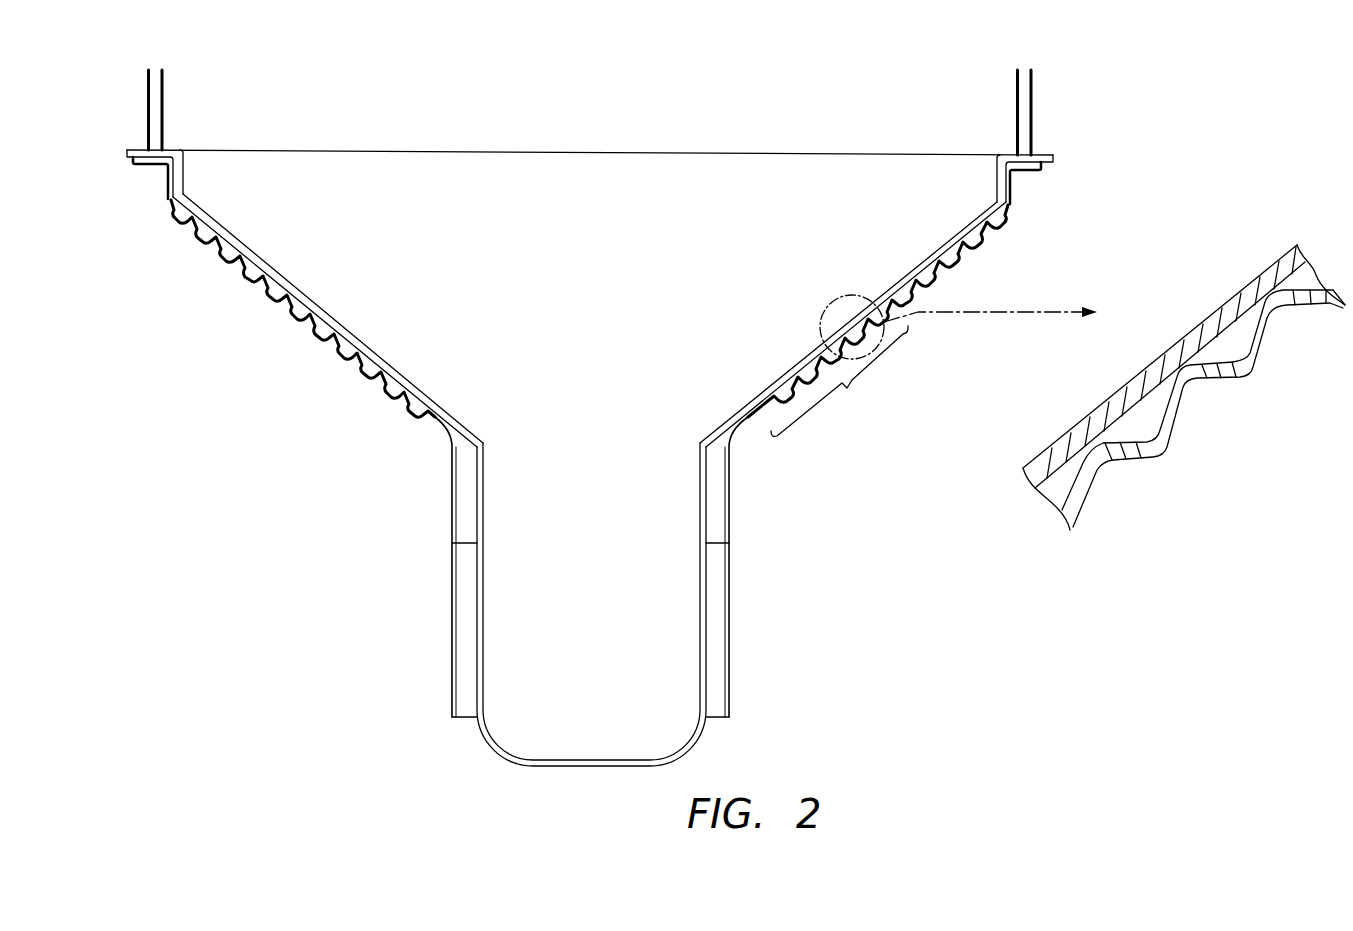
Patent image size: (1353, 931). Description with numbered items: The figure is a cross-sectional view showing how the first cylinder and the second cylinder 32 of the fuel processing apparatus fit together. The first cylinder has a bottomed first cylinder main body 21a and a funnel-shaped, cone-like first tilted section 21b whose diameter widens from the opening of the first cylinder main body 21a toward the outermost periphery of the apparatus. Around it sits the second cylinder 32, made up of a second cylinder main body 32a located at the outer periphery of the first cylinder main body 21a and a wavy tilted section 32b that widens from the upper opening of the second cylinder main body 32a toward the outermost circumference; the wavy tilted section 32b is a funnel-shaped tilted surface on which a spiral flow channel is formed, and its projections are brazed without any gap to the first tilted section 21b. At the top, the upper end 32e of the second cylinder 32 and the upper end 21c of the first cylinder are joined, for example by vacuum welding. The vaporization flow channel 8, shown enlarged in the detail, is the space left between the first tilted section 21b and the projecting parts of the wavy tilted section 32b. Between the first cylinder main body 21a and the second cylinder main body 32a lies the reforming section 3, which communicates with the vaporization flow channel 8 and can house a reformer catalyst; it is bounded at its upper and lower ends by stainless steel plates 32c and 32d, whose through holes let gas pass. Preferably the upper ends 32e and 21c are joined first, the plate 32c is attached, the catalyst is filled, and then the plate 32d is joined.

The reforming section 3 is at (455, 607).
The vaporization flow channel 8 is at (1273, 208).
The first cylinder main body 21a is at (587, 760).
The first tilted section 21b is at (338, 317).
The upper end of first cylinder 21c is at (127, 151).
The second cylinder 32 is at (320, 723).
The second cylinder main body 32a is at (451, 463).
The wavy tilted section 32b is at (388, 391).
The stainless steel plate 32c is at (452, 543).
The stainless steel plate 32d is at (452, 717).
The upper end of second cylinder 32e is at (133, 160).